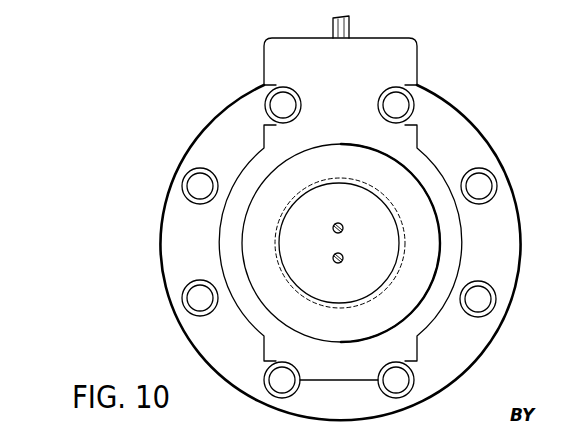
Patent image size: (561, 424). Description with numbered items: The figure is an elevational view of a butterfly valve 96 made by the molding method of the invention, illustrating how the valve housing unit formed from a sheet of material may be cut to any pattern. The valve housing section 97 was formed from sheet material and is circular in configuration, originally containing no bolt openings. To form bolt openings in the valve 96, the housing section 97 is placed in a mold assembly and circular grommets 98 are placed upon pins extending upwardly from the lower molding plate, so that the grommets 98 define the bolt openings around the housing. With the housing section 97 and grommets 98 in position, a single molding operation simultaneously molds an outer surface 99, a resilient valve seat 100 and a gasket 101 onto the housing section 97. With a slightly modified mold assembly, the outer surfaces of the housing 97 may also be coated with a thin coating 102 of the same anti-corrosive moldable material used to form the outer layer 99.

The butterfly valve 96 is at (146, 238).
The valve housing section 97 is at (415, 166).
The circular grommets 98 is at (494, 182).
The outer surface 99 is at (497, 238).
The resilient valve seat 100 is at (285, 250).
The gasket 101 is at (276, 305).
The thin coating 102 is at (287, 53).